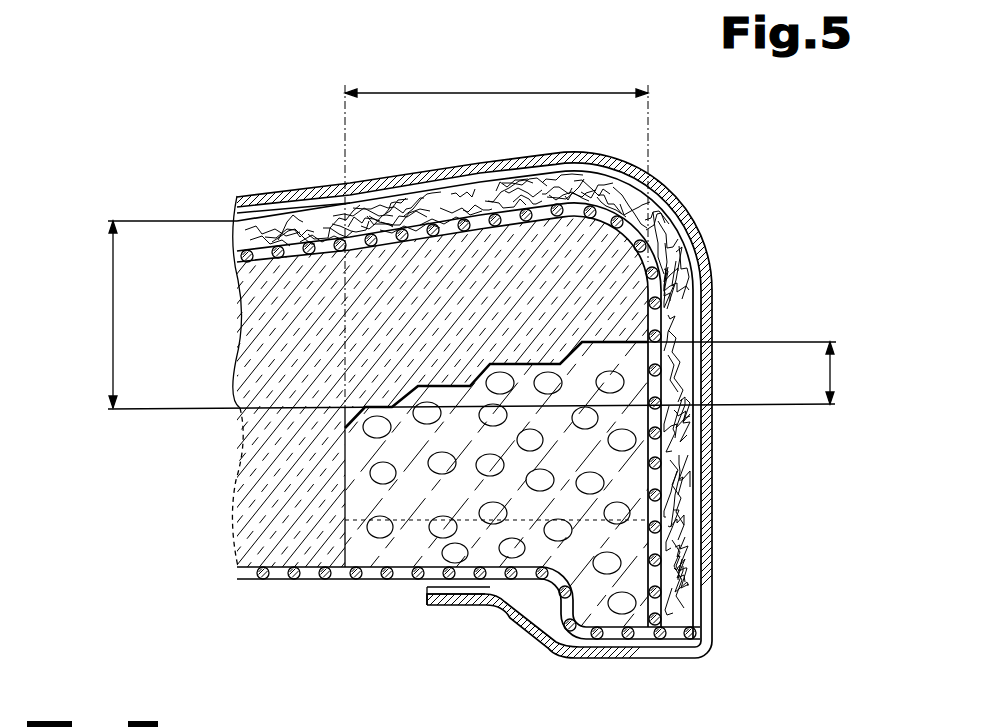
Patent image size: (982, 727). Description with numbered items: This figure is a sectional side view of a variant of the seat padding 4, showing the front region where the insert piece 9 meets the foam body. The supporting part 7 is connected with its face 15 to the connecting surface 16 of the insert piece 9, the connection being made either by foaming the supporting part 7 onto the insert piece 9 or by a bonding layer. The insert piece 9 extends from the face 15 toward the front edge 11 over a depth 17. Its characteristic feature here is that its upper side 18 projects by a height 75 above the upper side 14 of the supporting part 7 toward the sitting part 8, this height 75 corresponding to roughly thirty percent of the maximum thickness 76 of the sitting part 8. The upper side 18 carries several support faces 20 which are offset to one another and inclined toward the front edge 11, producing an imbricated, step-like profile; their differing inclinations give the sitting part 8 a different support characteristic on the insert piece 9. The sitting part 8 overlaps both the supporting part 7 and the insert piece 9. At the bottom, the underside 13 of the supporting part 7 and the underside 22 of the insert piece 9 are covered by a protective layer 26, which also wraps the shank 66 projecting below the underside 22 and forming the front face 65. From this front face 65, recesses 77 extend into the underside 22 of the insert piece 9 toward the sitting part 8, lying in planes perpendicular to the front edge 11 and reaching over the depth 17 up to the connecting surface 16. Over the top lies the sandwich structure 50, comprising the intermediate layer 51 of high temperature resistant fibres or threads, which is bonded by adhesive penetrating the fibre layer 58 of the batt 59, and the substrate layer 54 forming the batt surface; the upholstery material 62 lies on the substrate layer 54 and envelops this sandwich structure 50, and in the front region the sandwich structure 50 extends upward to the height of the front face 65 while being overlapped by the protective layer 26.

The seat padding 4 is at (132, 134).
The supporting part 7 is at (260, 521).
The sitting part 8 is at (260, 302).
The insert piece 9 is at (635, 477).
The front edge 11 is at (668, 376).
The underside 13 is at (257, 585).
The upper side 14 is at (262, 425).
The face 15 is at (367, 582).
The connecting surface 16 is at (328, 582).
The depth 17 is at (495, 95).
The upper side 18 is at (535, 362).
The support face 20 is at (568, 327).
The underside 22 is at (422, 607).
The protective layer 26 is at (554, 583).
The sandwich structure 50 is at (671, 244).
The intermediate layer 51 is at (325, 236).
The substrate layer 54 is at (240, 203).
The fibre layer 58 is at (398, 204).
The batt 59 is at (584, 193).
The upholstery material 62 is at (289, 195).
The front face 65 is at (642, 640).
The shank 66 is at (610, 631).
The height 75 is at (828, 380).
The maximum thickness 76 is at (104, 311).
The recess 77 is at (500, 545).